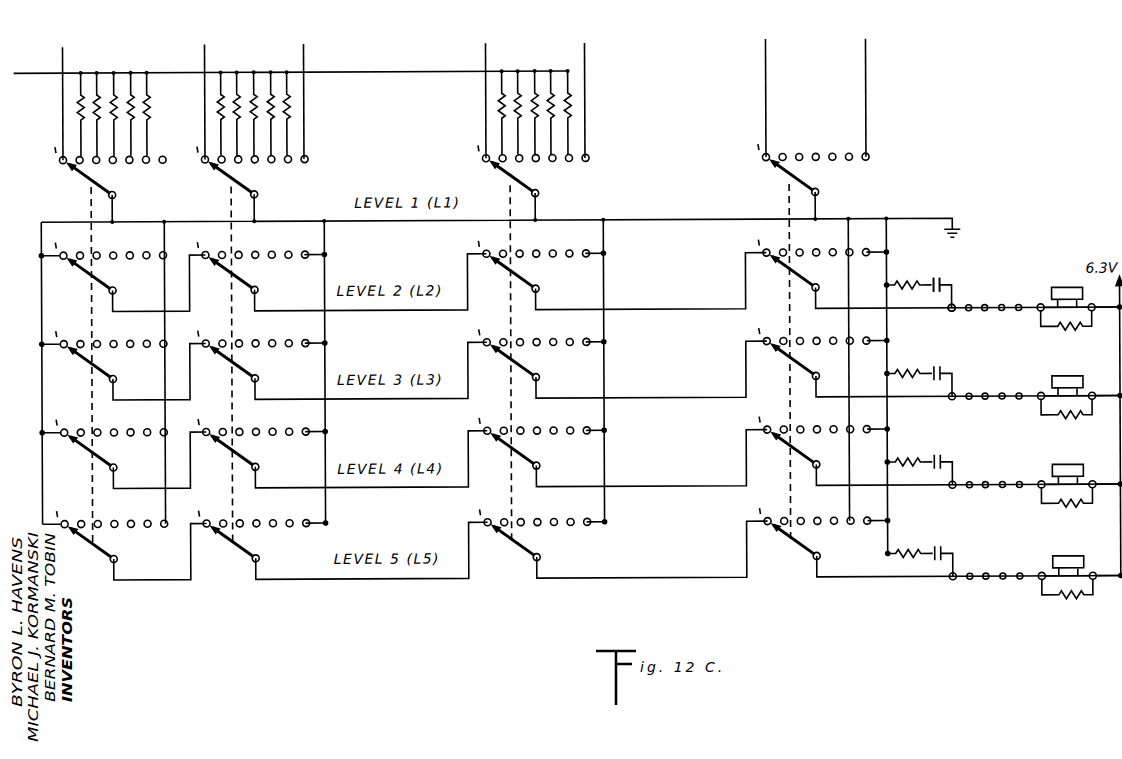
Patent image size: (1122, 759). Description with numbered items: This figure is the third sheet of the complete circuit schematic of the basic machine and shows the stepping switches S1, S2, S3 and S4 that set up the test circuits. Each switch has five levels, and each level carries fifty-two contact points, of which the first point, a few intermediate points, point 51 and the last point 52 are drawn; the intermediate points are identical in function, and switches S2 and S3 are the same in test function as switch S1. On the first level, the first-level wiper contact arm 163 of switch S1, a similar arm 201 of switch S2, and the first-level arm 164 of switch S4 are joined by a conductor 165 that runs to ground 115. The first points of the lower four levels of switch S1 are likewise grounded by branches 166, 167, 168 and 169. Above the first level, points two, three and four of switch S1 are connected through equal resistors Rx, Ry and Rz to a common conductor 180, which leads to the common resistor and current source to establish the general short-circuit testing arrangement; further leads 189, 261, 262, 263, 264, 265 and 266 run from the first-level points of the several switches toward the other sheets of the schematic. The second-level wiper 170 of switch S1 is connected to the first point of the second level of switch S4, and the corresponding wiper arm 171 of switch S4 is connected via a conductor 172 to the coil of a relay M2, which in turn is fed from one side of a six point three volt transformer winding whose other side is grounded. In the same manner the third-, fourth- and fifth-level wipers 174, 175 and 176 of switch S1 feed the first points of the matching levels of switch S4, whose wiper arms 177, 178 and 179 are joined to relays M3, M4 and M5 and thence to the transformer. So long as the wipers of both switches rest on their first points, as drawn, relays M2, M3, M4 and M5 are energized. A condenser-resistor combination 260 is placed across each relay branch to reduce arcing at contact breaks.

The common conductor 180 is at (32, 77).
The lead to switch contact 1 189 is at (64, 47).
The resistor Rx is at (81, 80).
The resistor Ry is at (98, 80).
The resistor Rz is at (115, 80).
The lead 261 is at (206, 64).
The lead 262 is at (306, 58).
The lead 263 is at (488, 52).
The lead 264 is at (587, 53).
The lead 265 is at (768, 52).
The lead 266 is at (868, 56).
The L1 wiper contact arm 163 is at (76, 182).
The switch wiper level 1 201 is at (216, 180).
The L1 arm 164 is at (781, 177).
The conductor 165 is at (659, 219).
The ground 115 is at (957, 236).
The condenser-resistor combination 260 is at (928, 281).
The conductor 172 is at (934, 313).
The branch 166 is at (58, 261).
The branch 167 is at (58, 349).
The branch 168 is at (58, 436).
The branch 169 is at (58, 514).
The L2 wiper 170 is at (106, 284).
The L3 wiper 174 is at (110, 374).
The L4 wiper 175 is at (110, 471).
The L5 wiper 176 is at (112, 553).
The wiper arm 171 is at (806, 281).
The wiper arm 177 is at (806, 369).
The wiper arm 178 is at (806, 459).
The wiper arm 179 is at (810, 549).
The point 51 is at (498, 332).
The last point 52 is at (522, 343).
The relay M2 is at (1062, 289).
The relay M3 is at (1062, 378).
The relay M4 is at (1061, 466).
The relay M5 is at (1061, 558).
The stepping switch S1 is at (118, 584).
The stepping switch S2 is at (257, 584).
The stepping switch S3 is at (536, 584).
The stepping switch S4 is at (816, 583).